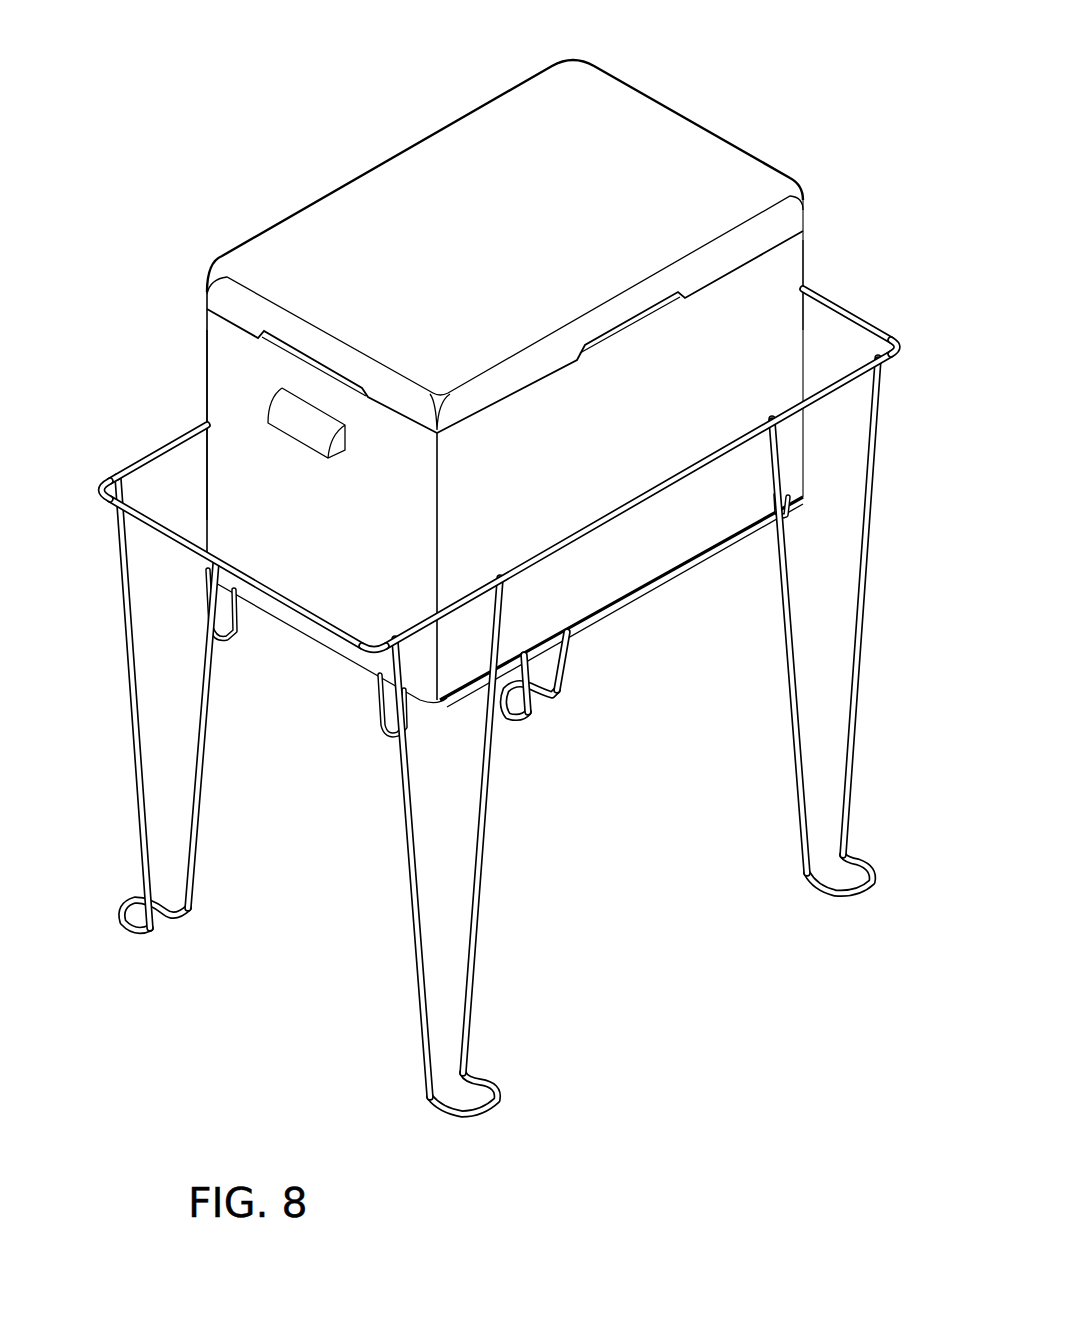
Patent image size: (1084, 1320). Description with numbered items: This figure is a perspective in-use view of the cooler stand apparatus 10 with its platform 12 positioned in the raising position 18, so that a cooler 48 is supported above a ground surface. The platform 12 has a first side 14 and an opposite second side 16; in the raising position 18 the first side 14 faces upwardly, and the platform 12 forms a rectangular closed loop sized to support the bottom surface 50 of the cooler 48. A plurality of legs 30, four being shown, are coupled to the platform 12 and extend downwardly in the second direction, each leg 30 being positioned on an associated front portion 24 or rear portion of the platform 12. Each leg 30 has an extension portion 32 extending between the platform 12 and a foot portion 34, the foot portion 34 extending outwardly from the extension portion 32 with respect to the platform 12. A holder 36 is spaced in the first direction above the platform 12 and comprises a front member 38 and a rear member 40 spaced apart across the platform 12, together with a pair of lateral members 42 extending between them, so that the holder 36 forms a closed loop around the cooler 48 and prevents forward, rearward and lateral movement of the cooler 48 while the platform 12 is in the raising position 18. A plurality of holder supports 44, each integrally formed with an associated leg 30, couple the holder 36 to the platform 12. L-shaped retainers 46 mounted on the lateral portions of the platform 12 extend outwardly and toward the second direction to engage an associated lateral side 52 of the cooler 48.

The cooler stand apparatus 10 is at (499, 594).
The platform 12 is at (444, 404).
The first side 14 is at (444, 466).
The second side 16 is at (735, 527).
The raising position 18 is at (499, 672).
The front portion 24 is at (663, 583).
The leg 30 is at (499, 765).
The extension portion 32 is at (200, 830).
The foot portion 34 is at (125, 920).
The holder 36 is at (511, 410).
The front member 38 is at (840, 397).
The rear member 40 is at (190, 435).
The lateral member 42 is at (853, 307).
The holder support 44 is at (120, 605).
The retainer 46 is at (230, 640).
The cooler 48 is at (655, 60).
The bottom surface 50 is at (300, 633).
The lateral side 52 is at (805, 327).